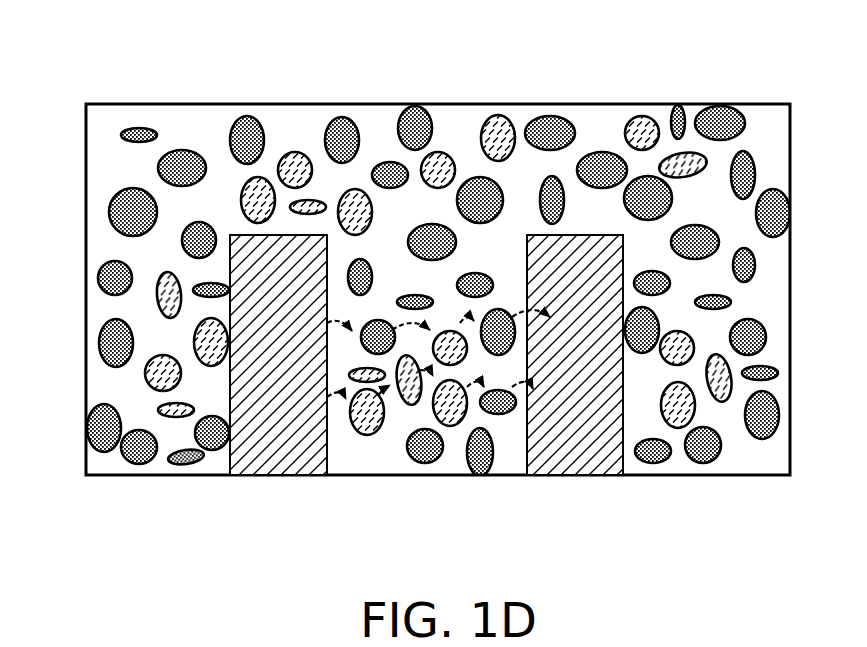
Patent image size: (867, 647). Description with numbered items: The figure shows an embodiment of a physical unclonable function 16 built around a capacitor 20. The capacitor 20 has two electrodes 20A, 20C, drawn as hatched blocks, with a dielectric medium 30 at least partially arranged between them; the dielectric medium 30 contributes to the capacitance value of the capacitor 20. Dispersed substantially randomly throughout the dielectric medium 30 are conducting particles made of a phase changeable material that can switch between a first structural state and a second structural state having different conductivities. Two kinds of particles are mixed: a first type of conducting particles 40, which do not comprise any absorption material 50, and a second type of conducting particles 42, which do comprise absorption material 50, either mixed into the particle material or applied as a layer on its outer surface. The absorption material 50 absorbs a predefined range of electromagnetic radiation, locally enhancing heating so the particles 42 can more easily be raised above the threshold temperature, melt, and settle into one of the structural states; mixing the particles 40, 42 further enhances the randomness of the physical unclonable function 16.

The physical unclonable function 16 is at (414, 295).
The dielectric medium 30 is at (297, 127).
The first type of conducting particles 40 is at (415, 115).
The second type of conducting particles 42 is at (497, 127).
The absorption material 50 is at (642, 124).
The capacitor 20 is at (427, 406).
The electrode 20A is at (278, 463).
The electrode 20C is at (575, 382).